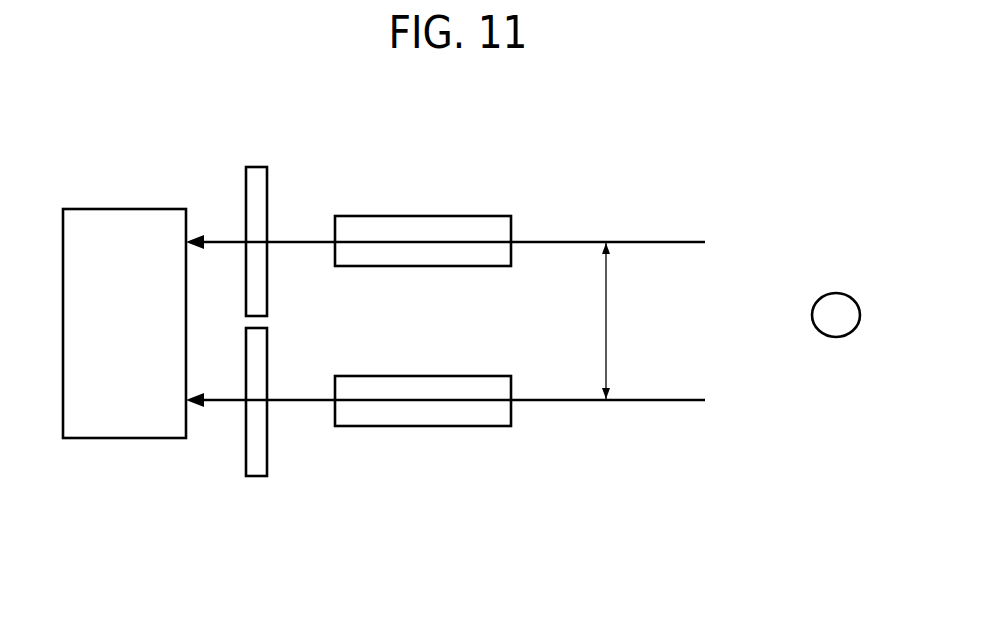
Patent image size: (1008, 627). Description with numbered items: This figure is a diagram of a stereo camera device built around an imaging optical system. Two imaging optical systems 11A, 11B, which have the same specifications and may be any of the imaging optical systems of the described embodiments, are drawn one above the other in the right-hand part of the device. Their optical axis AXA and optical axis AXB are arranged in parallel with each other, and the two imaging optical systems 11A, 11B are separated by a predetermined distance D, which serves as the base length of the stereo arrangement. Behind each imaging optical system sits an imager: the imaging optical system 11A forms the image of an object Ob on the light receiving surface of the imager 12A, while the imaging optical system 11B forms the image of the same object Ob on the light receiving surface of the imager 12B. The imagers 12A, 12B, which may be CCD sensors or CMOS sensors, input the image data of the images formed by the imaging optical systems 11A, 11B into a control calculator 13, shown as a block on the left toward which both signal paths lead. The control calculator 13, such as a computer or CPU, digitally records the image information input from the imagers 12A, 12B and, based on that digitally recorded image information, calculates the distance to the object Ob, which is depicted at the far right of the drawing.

The control calculator 13 is at (98, 209).
The imager 12A is at (253, 167).
The imager 12B is at (255, 476).
The imaging optical system 11A is at (388, 216).
The imaging optical system 11B is at (388, 376).
The optical axis AXA is at (658, 241).
The optical axis AXB is at (658, 399).
The predetermined distance D is at (614, 321).
The object Ob is at (836, 337).